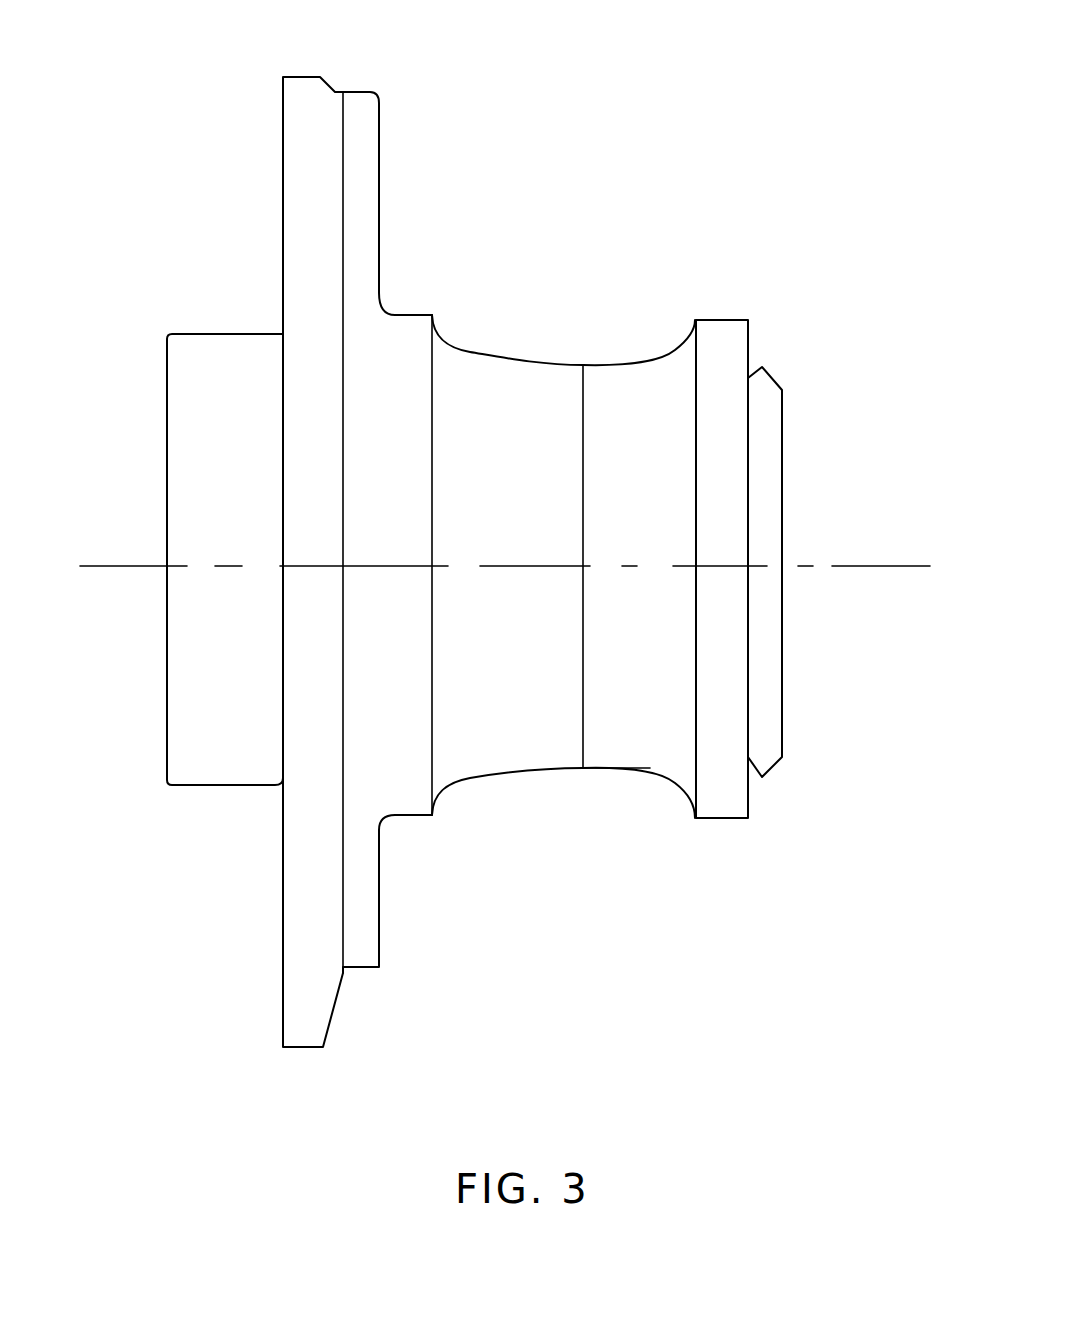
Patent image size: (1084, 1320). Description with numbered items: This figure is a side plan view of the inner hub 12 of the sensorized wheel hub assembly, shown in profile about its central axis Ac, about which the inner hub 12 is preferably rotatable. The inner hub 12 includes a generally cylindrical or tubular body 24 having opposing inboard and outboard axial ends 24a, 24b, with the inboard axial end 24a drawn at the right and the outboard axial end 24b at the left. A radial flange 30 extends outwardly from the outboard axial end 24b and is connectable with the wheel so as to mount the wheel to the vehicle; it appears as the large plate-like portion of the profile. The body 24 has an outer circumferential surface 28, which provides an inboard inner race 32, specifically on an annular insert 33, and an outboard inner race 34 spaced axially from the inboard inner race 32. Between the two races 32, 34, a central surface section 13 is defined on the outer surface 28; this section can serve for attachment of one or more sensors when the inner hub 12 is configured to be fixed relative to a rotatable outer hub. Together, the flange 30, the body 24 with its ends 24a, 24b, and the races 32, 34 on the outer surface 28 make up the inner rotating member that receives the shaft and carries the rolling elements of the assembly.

The inner hub 12 is at (698, 107).
The radial flange 30 is at (375, 158).
The outboard axial end 24b is at (167, 760).
The outboard inner race 34 is at (450, 345).
The inboard inner race 32 is at (680, 350).
The annular insert 33 is at (666, 765).
The central surface section 13 is at (575, 365).
The outer circumferential surface 28 is at (608, 775).
The tubular body 24 is at (745, 355).
The inboard axial end 24a is at (782, 718).
The central axis Ac is at (903, 567).